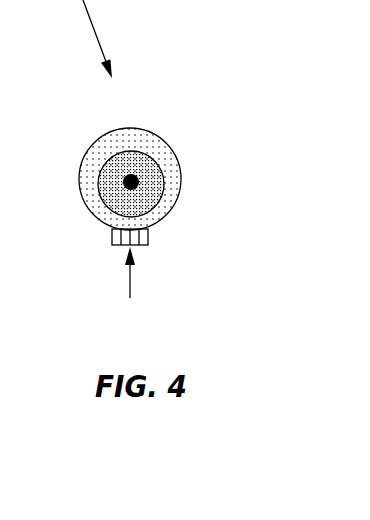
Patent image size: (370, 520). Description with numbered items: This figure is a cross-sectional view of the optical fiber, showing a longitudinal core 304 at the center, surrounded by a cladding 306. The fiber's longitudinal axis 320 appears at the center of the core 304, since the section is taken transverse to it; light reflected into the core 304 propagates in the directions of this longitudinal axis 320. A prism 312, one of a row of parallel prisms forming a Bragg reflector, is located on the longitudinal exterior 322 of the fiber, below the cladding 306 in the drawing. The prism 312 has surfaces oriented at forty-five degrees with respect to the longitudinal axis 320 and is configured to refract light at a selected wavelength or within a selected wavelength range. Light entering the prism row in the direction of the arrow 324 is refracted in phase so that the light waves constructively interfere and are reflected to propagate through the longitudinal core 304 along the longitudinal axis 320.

The longitudinal core 304 is at (152, 170).
The cladding 306 is at (131, 135).
The prism 312 is at (140, 247).
The longitudinal axis 320 is at (136, 188).
The longitudinal exterior 322 is at (120, 170).
The arrow 324 is at (130, 279).